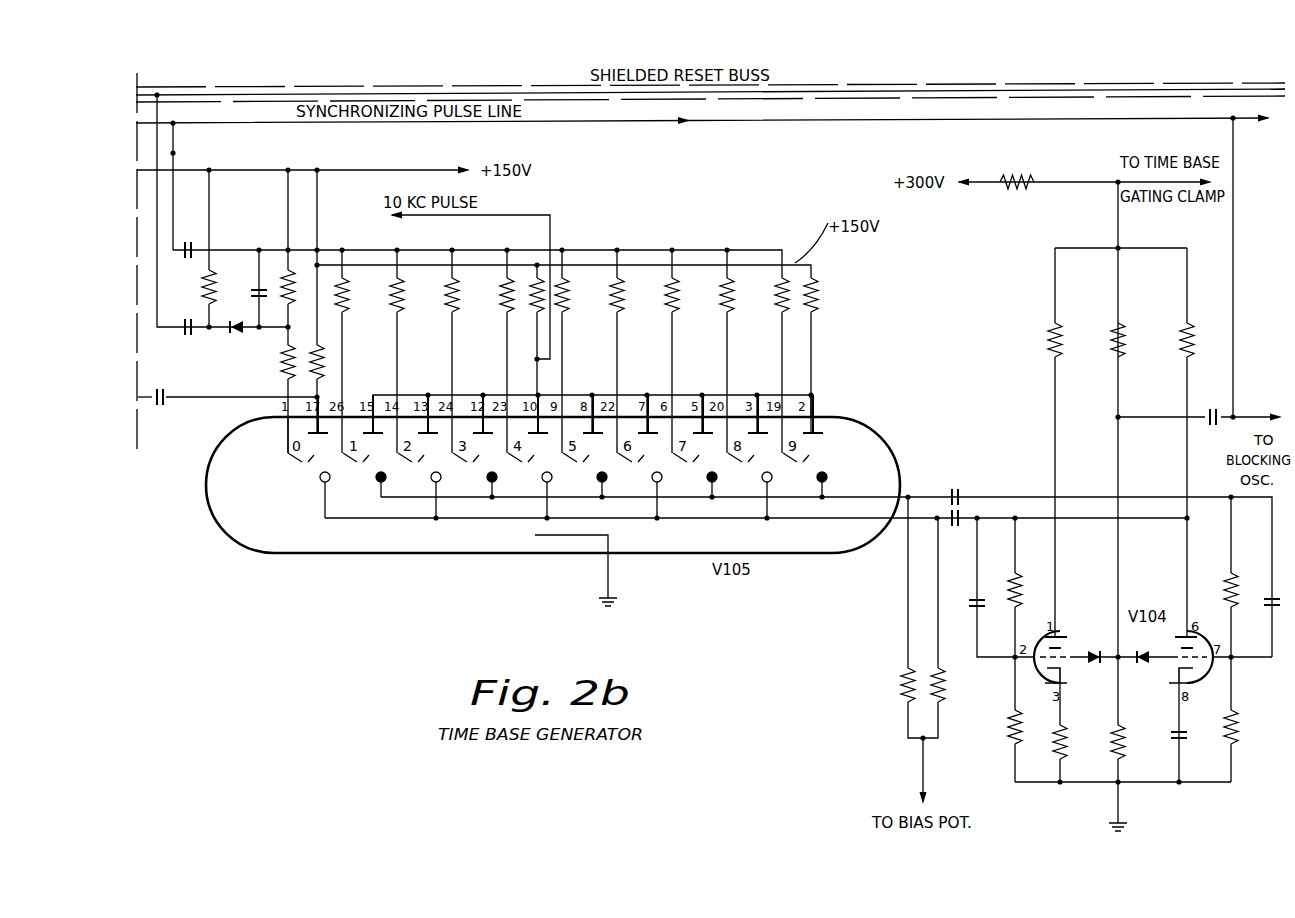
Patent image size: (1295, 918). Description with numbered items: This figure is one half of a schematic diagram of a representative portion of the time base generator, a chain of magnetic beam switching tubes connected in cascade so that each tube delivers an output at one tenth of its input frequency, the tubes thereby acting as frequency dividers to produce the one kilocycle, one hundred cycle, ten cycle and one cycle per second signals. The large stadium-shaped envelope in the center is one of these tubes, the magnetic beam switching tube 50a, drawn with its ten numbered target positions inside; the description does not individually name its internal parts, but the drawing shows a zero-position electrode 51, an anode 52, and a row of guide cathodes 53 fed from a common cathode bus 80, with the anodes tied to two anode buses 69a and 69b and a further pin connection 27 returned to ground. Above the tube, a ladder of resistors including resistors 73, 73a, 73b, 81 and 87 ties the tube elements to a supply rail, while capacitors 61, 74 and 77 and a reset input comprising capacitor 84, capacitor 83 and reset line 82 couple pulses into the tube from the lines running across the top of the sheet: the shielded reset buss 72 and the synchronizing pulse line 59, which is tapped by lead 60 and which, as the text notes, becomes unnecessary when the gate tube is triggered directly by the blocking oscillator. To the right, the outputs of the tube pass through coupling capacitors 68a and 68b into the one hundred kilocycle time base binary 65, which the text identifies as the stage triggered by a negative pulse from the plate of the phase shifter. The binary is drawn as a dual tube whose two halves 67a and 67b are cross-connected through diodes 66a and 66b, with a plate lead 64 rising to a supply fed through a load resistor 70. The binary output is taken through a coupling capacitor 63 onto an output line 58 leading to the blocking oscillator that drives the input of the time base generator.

The tube pin 27 ground connection 27 is at (582, 570).
The magnetic beam switching tube 50a is at (362, 552).
The zero cathode electrode 51 is at (290, 460).
The anode 52 is at (323, 482).
The guide cathodes 53 is at (315, 430).
The output line to blocking oscillator 58 is at (1246, 418).
The synchronizing pulse line 59 is at (873, 120).
The synchronizing pulse tap lead 60 is at (173, 154).
The coupling capacitor 61 is at (192, 247).
The coupling capacitor 63 is at (1208, 415).
The plate lead 64 is at (1120, 463).
The time base binary 65 is at (1078, 789).
The diode 66a is at (1098, 662).
The diode 66b is at (1143, 662).
The tube section V104 first half 67a is at (1033, 640).
The tube section V104 second half 67b is at (1207, 673).
The coupling capacitor 68a is at (962, 487).
The coupling capacitor 68b is at (957, 525).
The anode bus 69a is at (865, 495).
The anode bus 69b is at (792, 517).
The plate load resistor 70 is at (1063, 182).
The shielded reset buss 72 is at (803, 88).
The guide resistor 73 is at (785, 307).
The resistor 73a is at (296, 275).
The resistor 73b is at (282, 362).
The capacitor 74 is at (158, 292).
The capacitor 77 is at (257, 292).
The guide cathode bus 80 is at (627, 395).
The resistor 81 is at (317, 373).
The reset line 82 is at (198, 397).
The reset capacitor 83 is at (162, 400).
The reset input capacitor 84 is at (146, 397).
The resistor 87 is at (815, 307).